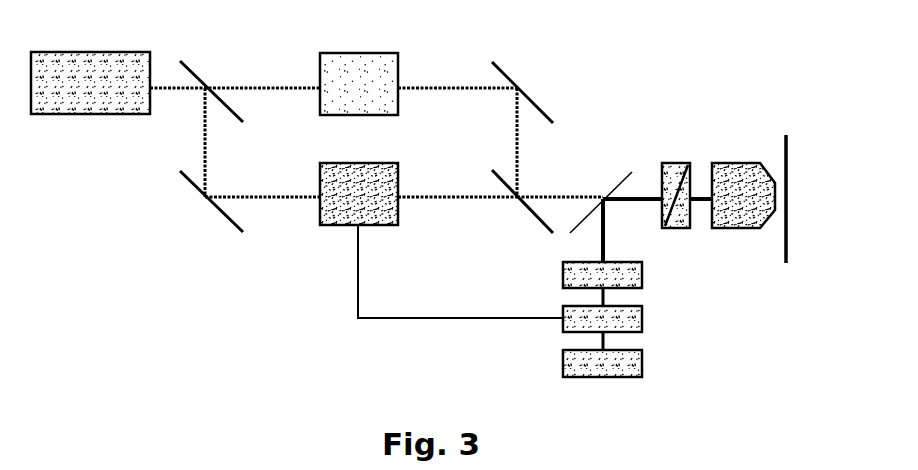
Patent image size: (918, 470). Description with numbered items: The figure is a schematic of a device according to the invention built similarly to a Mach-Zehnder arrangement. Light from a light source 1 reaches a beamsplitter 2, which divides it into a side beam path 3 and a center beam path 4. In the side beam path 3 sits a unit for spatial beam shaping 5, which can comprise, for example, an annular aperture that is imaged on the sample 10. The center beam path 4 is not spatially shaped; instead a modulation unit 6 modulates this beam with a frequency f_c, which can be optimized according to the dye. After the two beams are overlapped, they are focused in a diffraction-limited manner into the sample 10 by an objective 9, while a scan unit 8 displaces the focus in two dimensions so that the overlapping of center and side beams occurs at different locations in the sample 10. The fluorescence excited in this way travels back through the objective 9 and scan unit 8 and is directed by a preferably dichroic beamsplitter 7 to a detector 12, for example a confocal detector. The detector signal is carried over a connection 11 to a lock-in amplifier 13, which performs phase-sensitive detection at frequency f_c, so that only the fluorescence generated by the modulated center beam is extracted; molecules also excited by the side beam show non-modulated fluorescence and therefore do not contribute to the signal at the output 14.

The light source 1 is at (90, 62).
The beamsplitter 2 is at (211, 84).
The side beam path 3 is at (235, 67).
The center beam path 4 is at (250, 164).
The unit for spatial beam shaping 5 is at (359, 64).
The modulation unit 6 is at (363, 214).
The dichroic beamsplitter 7 is at (601, 189).
The scan unit 8 is at (676, 175).
The objective 9 is at (743, 175).
The sample 10 is at (810, 193).
The signal line 11 is at (625, 274).
The detector 12 is at (625, 276).
The lock-in amplifier 13 is at (625, 320).
The output 14 is at (625, 365).